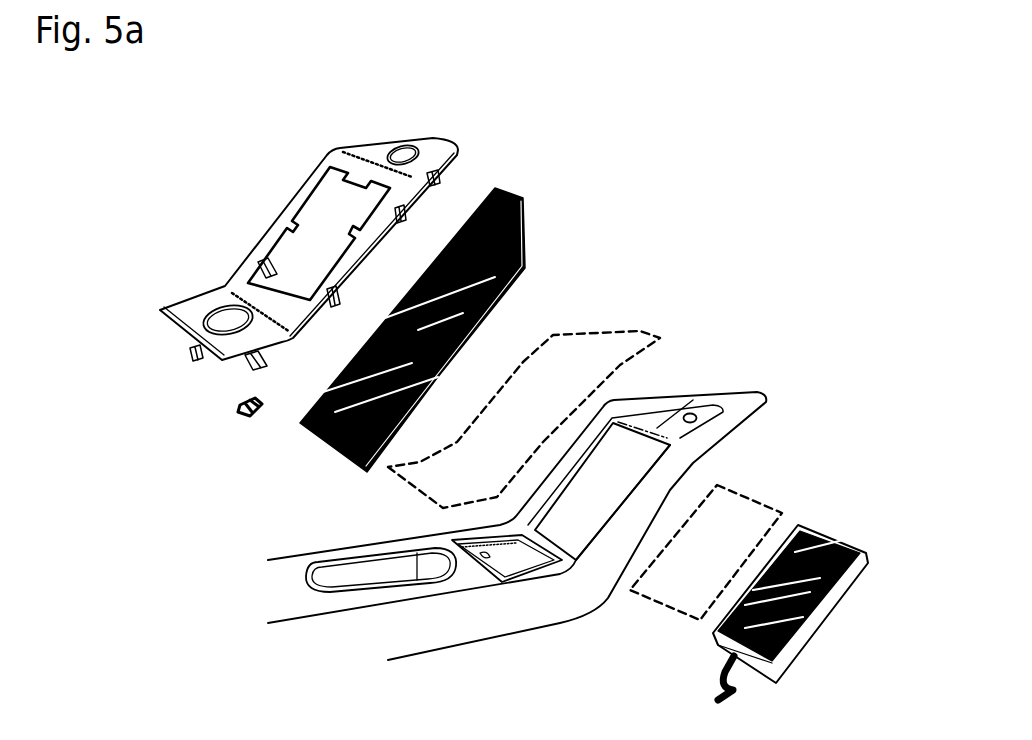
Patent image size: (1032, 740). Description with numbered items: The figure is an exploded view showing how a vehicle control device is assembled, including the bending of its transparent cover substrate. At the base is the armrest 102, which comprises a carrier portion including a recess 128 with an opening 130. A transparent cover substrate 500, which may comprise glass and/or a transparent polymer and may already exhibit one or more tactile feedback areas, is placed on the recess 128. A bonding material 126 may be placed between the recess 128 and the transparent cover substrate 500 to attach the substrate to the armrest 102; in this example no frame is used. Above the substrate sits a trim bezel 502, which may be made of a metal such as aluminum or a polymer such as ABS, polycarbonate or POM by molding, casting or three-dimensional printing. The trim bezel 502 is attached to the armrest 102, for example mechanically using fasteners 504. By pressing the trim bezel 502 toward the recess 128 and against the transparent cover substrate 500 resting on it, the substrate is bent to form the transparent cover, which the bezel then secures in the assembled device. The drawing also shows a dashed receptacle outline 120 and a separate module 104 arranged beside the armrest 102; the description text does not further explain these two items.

The trim bezel 502 is at (448, 143).
The transparent cover substrate 500 is at (513, 188).
The bonding material 126 is at (658, 335).
The armrest 102 is at (758, 393).
The recess 128 is at (690, 404).
The opening 130 is at (579, 520).
The module receptacle 120 is at (752, 498).
The charging module 104 is at (838, 535).
The fasteners 504 is at (233, 417).